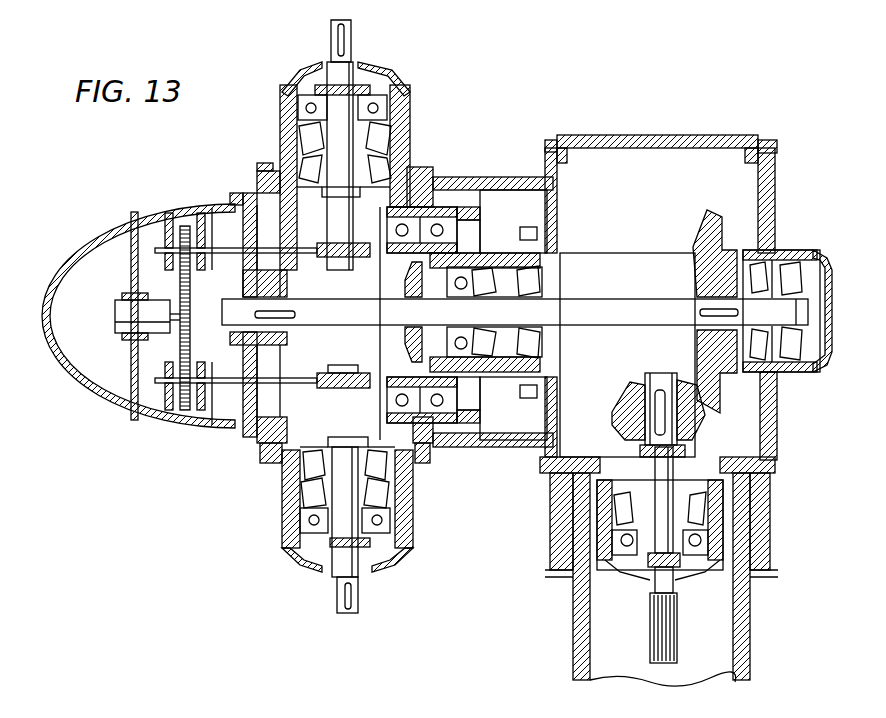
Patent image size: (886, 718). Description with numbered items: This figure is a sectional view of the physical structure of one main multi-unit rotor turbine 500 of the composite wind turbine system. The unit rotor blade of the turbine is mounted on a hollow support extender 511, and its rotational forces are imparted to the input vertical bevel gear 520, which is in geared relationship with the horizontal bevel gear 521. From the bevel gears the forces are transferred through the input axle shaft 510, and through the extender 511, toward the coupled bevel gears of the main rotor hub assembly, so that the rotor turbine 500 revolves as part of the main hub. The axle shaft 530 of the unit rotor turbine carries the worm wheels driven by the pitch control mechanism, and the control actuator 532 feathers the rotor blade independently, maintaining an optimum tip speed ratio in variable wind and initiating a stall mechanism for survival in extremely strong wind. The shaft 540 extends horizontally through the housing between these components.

The main multi-unit rotor turbine 500 is at (196, 163).
The input axle shaft 510 is at (677, 652).
The hollow support extender 511 is at (753, 616).
The input vertical bevel gear 520 is at (693, 233).
The horizontal bevel gear 521 is at (707, 433).
The axle shaft 530 is at (346, 131).
The control actuator 532 is at (154, 271).
The counter shaft 540 is at (627, 307).